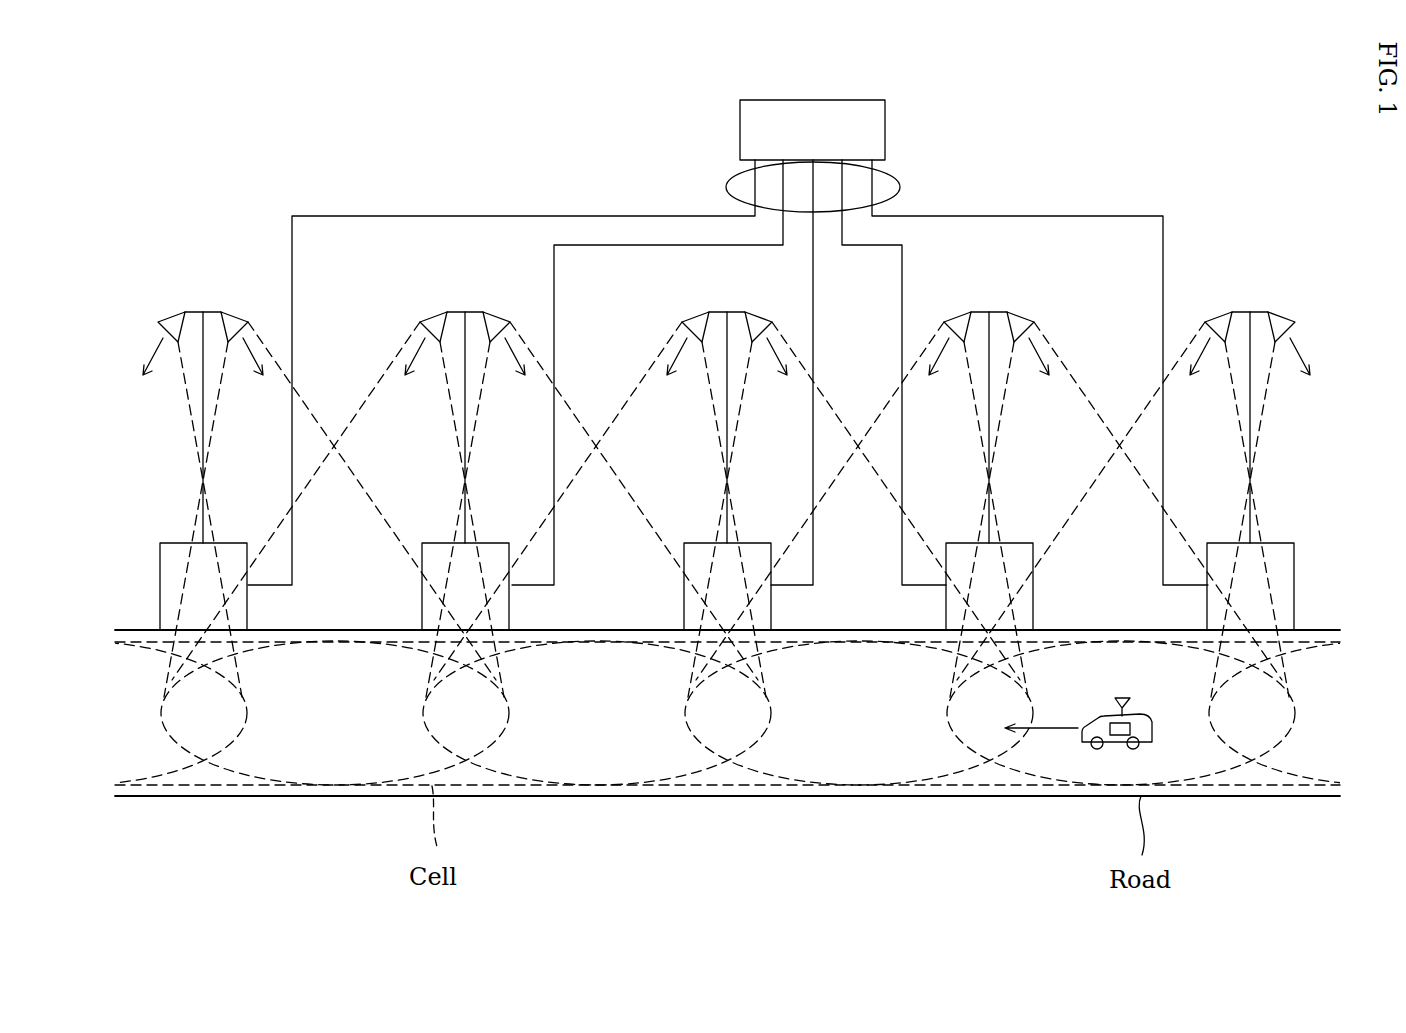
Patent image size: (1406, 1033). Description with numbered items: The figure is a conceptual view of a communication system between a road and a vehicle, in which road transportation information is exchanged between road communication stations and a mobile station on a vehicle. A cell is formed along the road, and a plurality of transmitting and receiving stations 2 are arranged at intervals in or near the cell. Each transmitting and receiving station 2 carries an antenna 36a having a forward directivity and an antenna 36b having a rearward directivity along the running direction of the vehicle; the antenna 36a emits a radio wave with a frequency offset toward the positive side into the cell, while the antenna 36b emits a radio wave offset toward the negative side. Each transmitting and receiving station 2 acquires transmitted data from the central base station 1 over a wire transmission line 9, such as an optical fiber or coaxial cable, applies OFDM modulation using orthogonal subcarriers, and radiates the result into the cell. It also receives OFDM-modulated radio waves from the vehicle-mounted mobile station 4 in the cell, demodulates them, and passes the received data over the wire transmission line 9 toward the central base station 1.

The central base station 1 is at (885, 130).
The wire transmission line 9 is at (900, 185).
The transmitting and receiving station 2 is at (230, 543).
The antenna having a forward directivity 36a is at (953, 312).
The antenna having a rearward directivity 36b is at (1019, 312).
The vehicle-mounted mobile station 4 is at (1130, 720).